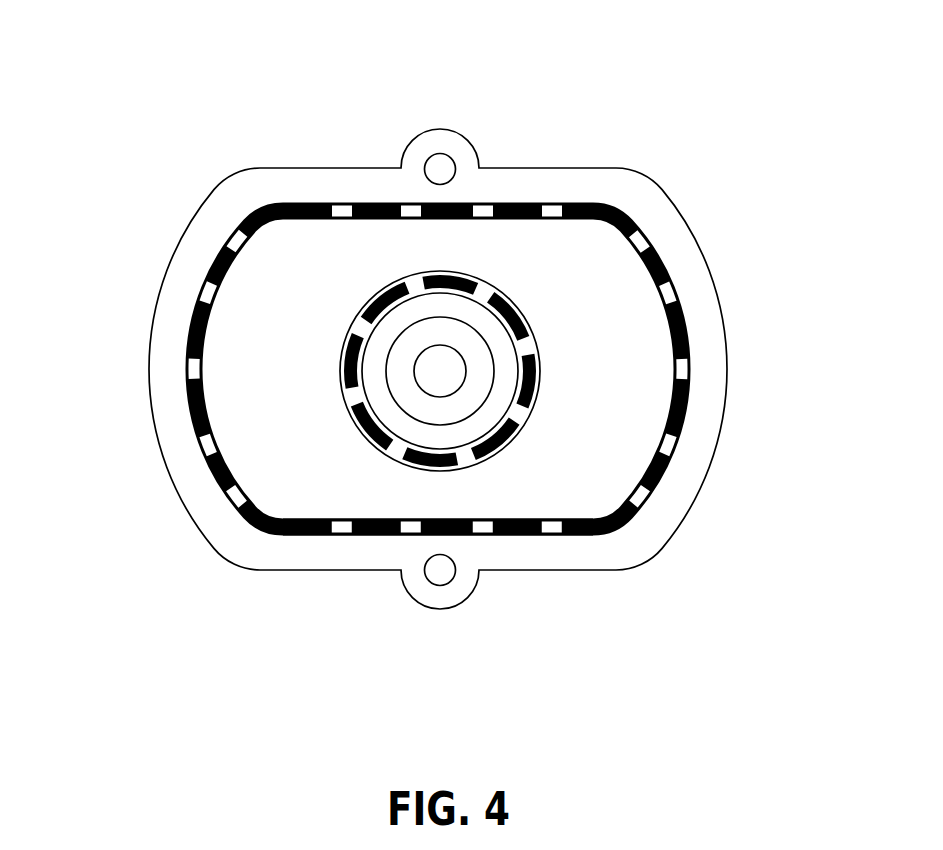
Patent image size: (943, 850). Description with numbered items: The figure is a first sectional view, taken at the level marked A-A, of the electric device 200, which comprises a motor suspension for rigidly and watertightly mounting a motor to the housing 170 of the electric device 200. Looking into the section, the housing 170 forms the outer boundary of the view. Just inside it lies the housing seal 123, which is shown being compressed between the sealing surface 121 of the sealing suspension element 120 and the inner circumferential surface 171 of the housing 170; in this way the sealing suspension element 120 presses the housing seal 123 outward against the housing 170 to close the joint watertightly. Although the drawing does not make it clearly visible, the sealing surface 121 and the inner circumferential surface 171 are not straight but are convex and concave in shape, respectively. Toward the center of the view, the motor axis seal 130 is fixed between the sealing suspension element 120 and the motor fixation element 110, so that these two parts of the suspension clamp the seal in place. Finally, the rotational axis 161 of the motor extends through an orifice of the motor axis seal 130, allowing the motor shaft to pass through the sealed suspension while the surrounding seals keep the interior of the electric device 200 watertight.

The electric device 200 is at (231, 93).
The housing 170 is at (640, 197).
The sealing suspension element 120 is at (612, 298).
The motor fixation element 110 is at (505, 377).
The motor axis seal 130 is at (507, 438).
The rotational axis 161 is at (432, 368).
The inner circumferential surface 171 is at (229, 504).
The sealing surface 121 is at (207, 468).
The housing seal 123 is at (527, 533).